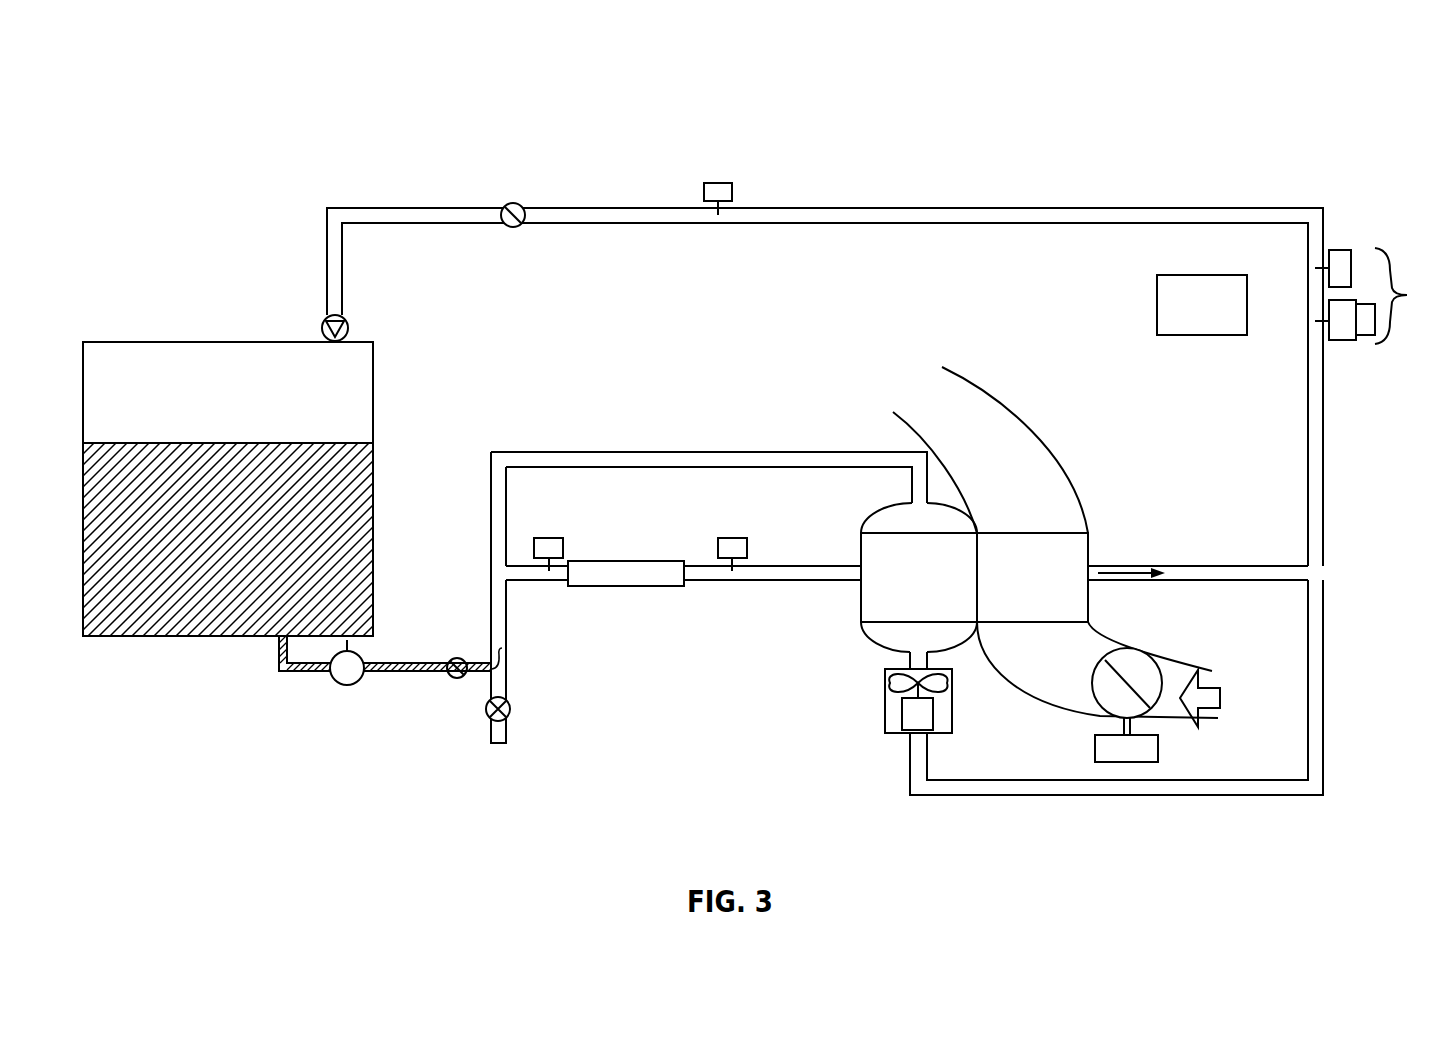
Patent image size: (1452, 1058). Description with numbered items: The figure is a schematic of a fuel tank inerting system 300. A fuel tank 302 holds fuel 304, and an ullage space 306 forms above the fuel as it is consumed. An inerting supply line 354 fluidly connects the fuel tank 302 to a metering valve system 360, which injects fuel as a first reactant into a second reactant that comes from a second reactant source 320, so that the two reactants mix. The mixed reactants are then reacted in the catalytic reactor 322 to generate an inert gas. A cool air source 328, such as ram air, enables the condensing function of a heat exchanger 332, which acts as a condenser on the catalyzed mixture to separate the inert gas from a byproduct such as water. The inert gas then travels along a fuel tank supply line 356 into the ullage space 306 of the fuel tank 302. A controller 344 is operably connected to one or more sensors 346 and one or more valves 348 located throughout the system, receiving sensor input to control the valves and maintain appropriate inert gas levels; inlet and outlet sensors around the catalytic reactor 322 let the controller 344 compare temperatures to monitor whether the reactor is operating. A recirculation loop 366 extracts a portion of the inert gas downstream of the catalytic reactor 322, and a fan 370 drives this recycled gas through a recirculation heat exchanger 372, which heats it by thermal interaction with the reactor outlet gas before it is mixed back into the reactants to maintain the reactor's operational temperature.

The inerting system 300 is at (220, 120).
The fuel tank 302 is at (374, 404).
The fuel 304 is at (182, 608).
The ullage space 306 is at (162, 358).
The second reactant source 320 is at (477, 775).
The catalytic reactor 322 is at (626, 587).
The cool air source 328 is at (1233, 710).
The heat exchanger 332 is at (1012, 588).
The controller 344 is at (1181, 318).
The sensors 346 is at (718, 192).
The valves 348 is at (513, 203).
The inerting supply line 354 is at (397, 664).
The fuel tank supply line 356 is at (927, 216).
The metering valve system 360 is at (536, 676).
The recirculation loop 366 is at (697, 453).
The fan 370 is at (890, 706).
The recirculation heat exchanger 372 is at (898, 588).